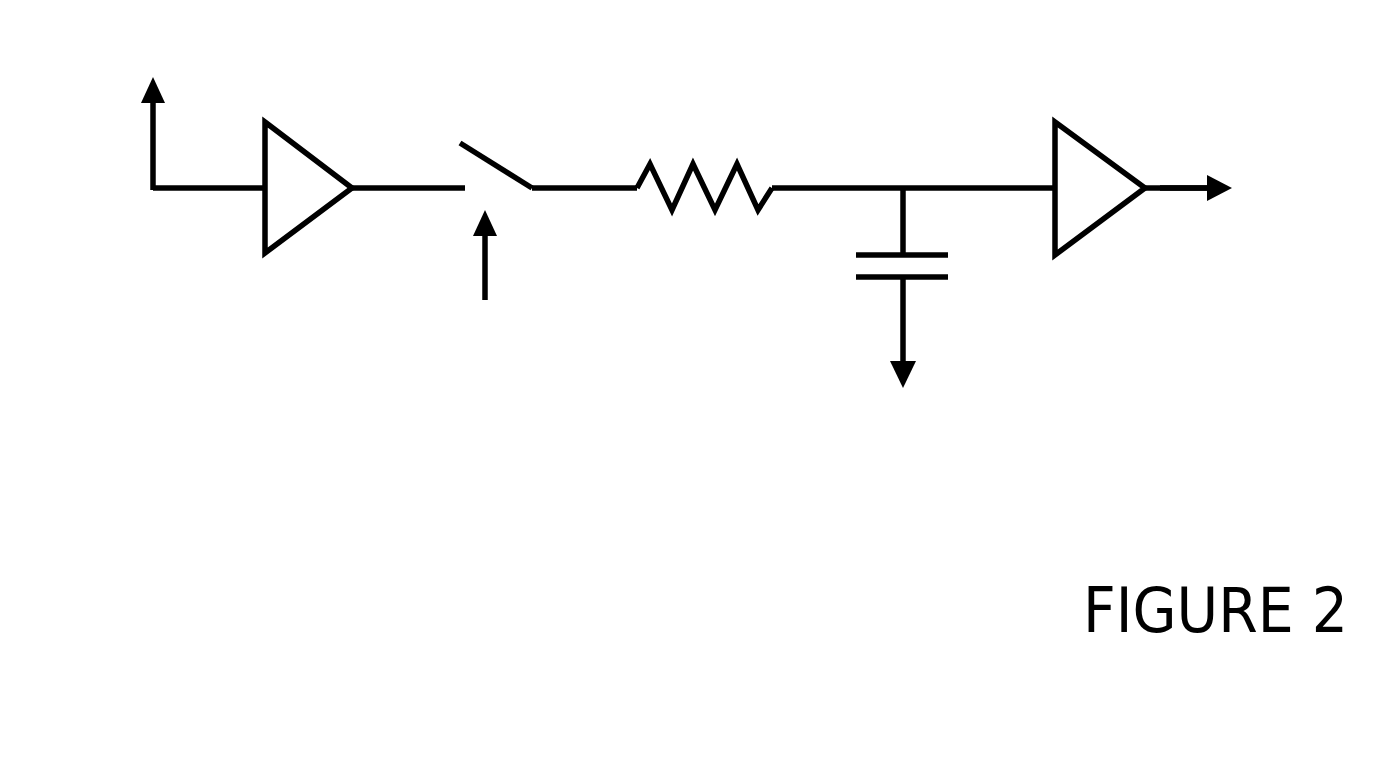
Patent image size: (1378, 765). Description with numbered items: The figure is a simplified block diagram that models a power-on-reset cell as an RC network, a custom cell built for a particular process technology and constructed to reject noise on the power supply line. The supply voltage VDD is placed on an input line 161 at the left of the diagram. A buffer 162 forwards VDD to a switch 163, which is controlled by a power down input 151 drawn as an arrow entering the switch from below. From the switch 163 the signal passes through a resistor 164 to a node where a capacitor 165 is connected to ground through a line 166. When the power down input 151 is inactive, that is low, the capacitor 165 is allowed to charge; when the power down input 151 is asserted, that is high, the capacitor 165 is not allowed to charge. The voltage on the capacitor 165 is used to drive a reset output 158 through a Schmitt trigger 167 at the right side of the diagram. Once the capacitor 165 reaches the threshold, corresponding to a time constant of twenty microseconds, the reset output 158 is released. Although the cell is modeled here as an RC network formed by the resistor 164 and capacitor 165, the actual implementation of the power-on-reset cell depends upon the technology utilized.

The power down input 151 is at (485, 300).
The reset output 158 is at (1170, 190).
The input line 161 is at (156, 121).
The buffer 162 is at (267, 253).
The switch 163 is at (510, 190).
The resistor 164 is at (685, 210).
The capacitor 165 is at (948, 277).
The line 166 is at (905, 388).
The Schmitt trigger 167 is at (1057, 255).